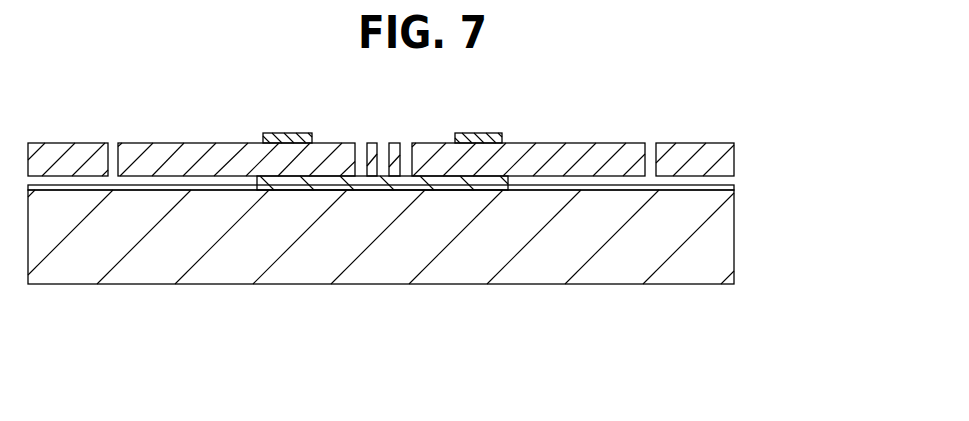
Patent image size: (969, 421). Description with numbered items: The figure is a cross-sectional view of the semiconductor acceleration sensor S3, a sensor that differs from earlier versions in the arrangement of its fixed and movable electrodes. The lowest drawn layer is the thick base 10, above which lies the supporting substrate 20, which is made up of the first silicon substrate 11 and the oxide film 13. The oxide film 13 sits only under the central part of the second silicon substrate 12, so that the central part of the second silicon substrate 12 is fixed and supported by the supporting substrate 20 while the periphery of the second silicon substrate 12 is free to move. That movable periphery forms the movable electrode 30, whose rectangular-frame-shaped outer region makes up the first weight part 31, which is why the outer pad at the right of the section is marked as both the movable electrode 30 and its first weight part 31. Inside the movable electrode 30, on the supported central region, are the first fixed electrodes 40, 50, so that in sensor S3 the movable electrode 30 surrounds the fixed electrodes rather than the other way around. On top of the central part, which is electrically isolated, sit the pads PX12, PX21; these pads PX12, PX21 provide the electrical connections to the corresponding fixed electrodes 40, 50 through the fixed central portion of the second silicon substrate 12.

The substrate 10 is at (175, 285).
The first silicon substrate 11 is at (500, 253).
The oxide film 13 is at (513, 190).
The supporting substrate 20 is at (381, 265).
The first fixed electrode 50 is at (153, 143).
The first fixed electrode 40 is at (582, 143).
The movable electrode 30 is at (718, 131).
The first weight part 31 is at (719, 159).
The second silicon substrate 12 is at (735, 165).
The semiconductor acceleration sensor S3 is at (790, 108).
The pad PX12 is at (288, 133).
The pad PX21 is at (477, 133).